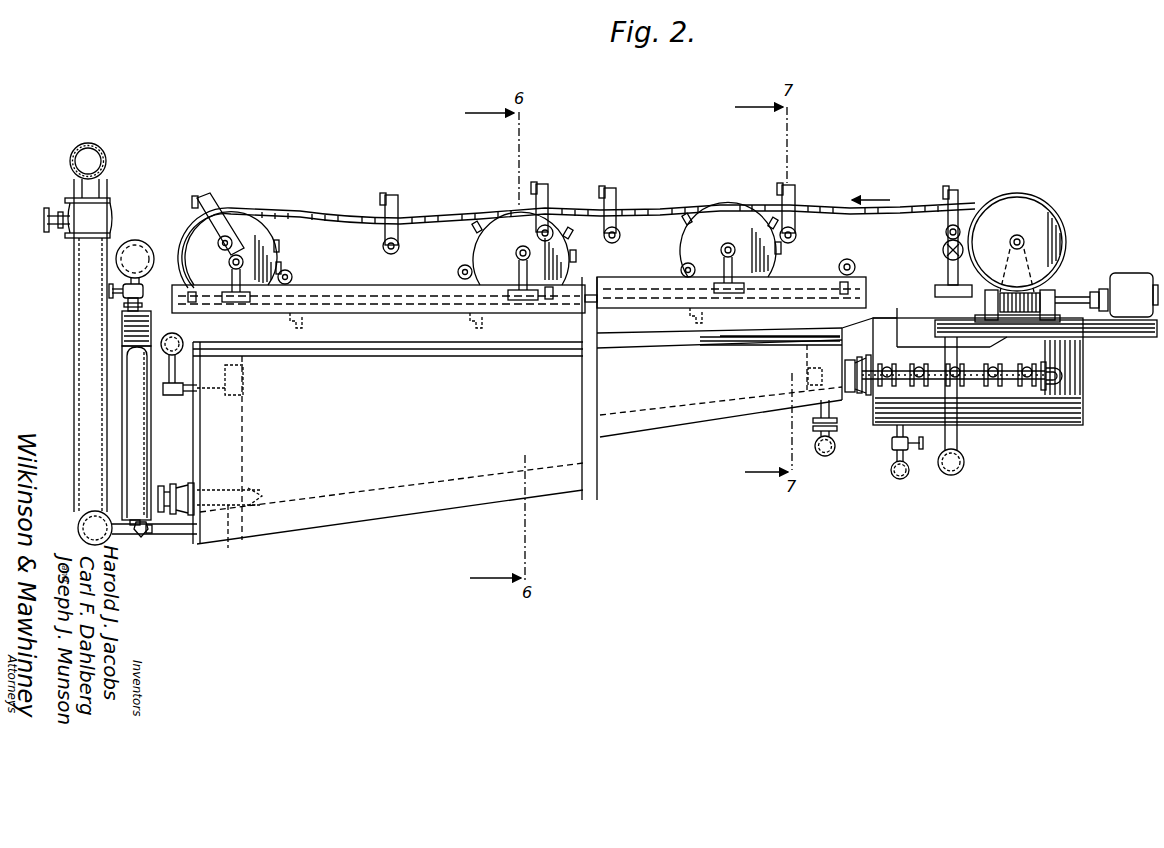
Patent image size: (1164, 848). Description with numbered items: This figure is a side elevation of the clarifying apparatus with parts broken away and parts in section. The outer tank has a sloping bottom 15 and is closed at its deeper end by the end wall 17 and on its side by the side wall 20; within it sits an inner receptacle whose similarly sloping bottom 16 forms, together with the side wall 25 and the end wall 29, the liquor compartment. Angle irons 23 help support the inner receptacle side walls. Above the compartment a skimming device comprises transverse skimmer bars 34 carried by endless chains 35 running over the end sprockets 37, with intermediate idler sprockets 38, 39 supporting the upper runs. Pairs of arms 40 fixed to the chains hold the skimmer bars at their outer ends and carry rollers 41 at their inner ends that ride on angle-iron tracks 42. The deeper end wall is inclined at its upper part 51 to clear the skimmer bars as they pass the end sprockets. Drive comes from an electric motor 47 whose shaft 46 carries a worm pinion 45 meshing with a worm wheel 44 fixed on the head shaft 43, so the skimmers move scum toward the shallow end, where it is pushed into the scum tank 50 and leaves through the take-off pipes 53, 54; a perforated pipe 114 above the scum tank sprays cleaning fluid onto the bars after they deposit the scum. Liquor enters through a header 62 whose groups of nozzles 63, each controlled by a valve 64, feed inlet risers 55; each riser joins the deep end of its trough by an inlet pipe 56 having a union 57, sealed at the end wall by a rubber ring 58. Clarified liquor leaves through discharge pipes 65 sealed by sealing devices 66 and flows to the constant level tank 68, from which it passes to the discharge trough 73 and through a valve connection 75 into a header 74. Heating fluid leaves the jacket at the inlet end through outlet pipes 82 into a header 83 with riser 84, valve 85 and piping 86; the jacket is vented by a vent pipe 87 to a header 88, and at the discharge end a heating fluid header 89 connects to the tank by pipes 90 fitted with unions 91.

The sloping bottom of outer tank 15 is at (615, 440).
The sloping bottom of inner tank 16 is at (695, 412).
The end wall 17 is at (196, 437).
The side wall 20 is at (400, 466).
The angle irons 23 is at (350, 345).
The side wall of inner receptacle 25 is at (385, 344).
The end wall of inner receptacle 29 is at (246, 448).
The skimming bars 34 is at (612, 192).
The endless chains 35 is at (835, 205).
The end sprockets 37 is at (257, 232).
The idler sprockets 38 is at (732, 212).
The idler sprockets 39 is at (507, 226).
The arms 40 is at (395, 202).
The rollers 41 is at (621, 235).
The tracks 42 is at (352, 285).
The head shaft 43 is at (1017, 236).
The worm wheel 44 is at (1033, 212).
The worm pinion 45 is at (1025, 333).
The motor shaft 46 is at (1070, 297).
The electric motor 47 is at (1125, 275).
The scum tank 50 is at (912, 330).
The inclined part of end wall 51 is at (205, 340).
The take-off pipes 53 is at (958, 436).
The take-off pipe (header) 54 is at (964, 465).
The inlet risers 55 is at (127, 373).
The inlet pipe 56 is at (226, 547).
The unions 57 is at (162, 538).
The sealing ring 58 is at (184, 483).
The header 62 is at (134, 240).
The discharge nozzles 63 is at (126, 306).
The valve 64 is at (114, 291).
The discharge pipes 65 is at (1040, 395).
The sealing devices 66 is at (862, 398).
The constant level tank 68 is at (1066, 375).
The discharge trough 73 is at (1075, 407).
The header 74 is at (896, 480).
The valve connection 75 is at (893, 447).
The heating fluid outlet pipes 82 is at (176, 537).
The header 83 is at (83, 514).
The riser 84 is at (90, 455).
The valve 85 is at (46, 214).
The piping 86 is at (88, 148).
The vent pipe 87 is at (193, 395).
The header 88 is at (124, 340).
The heating fluid header 89 is at (825, 457).
The pipes 90 is at (815, 414).
The unions 91 is at (815, 421).
The perforated pipe 114 is at (944, 250).